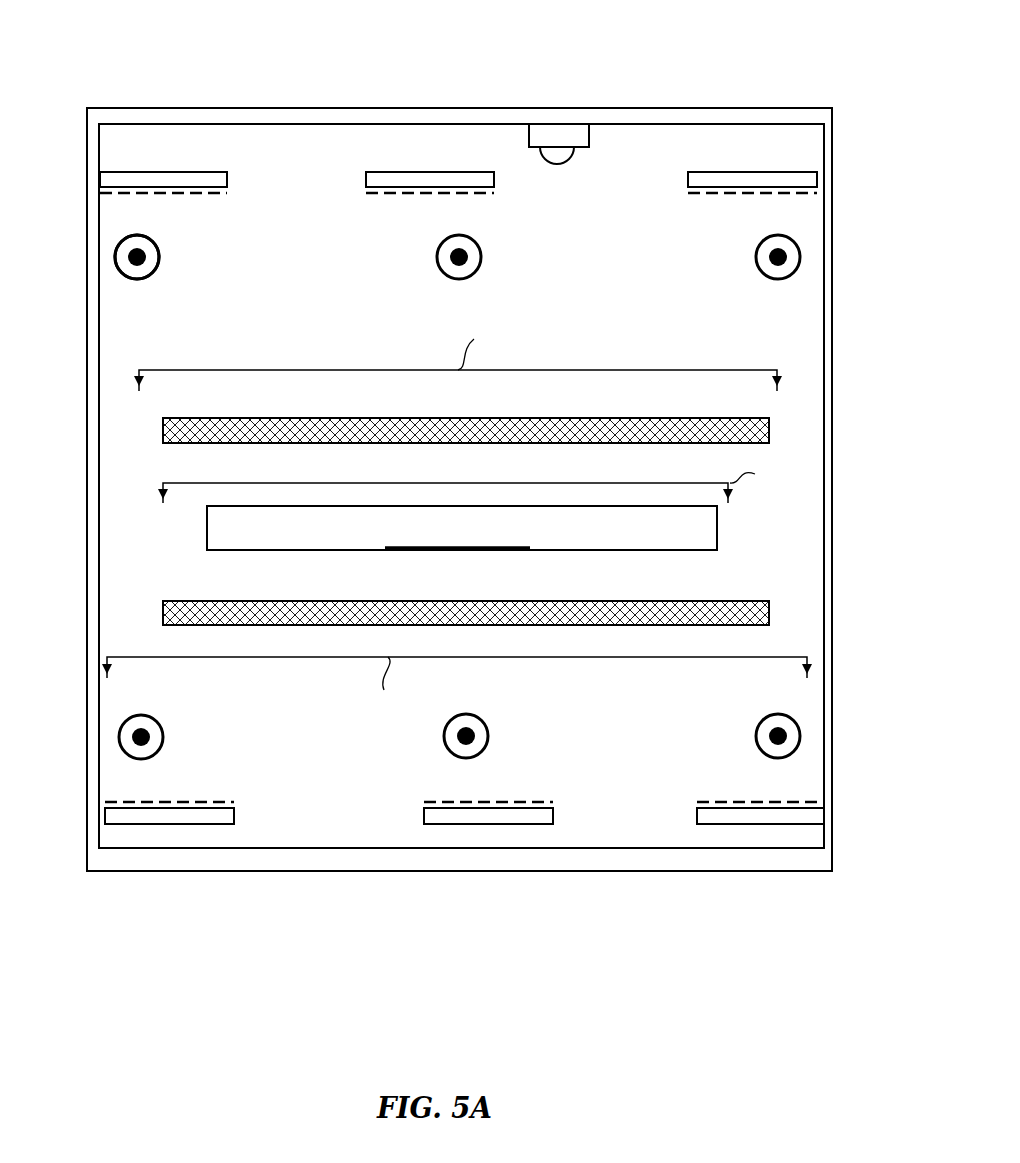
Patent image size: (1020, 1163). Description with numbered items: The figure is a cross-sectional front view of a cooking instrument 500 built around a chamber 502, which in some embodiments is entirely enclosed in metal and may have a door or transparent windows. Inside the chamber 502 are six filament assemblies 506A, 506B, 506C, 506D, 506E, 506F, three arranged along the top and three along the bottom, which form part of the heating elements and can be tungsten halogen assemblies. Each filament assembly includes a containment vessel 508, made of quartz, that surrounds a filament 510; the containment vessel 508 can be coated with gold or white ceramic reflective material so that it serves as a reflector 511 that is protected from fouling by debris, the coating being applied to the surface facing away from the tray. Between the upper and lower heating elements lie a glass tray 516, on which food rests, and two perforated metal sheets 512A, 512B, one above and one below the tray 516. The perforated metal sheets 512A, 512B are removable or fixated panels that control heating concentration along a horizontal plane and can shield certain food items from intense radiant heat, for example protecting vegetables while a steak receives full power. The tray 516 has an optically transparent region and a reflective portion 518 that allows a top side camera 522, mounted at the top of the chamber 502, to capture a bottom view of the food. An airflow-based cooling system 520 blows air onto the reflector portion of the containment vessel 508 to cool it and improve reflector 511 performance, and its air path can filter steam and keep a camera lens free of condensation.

The cooking instrument 500 is at (90, 41).
The chamber 502 is at (434, 858).
The filament assembly 506A is at (160, 271).
The filament assembly 506B is at (428, 231).
The filament assembly 506C is at (746, 231).
The filament assembly 506D is at (178, 712).
The filament assembly 506E is at (432, 708).
The filament assembly 506F is at (746, 708).
The containment vessel 508 is at (160, 258).
The filament 510 is at (140, 265).
The reflector 511 is at (148, 238).
The perforated metal sheet 512A is at (163, 428).
The perforated metal sheet 512B is at (163, 615).
The tray 516 is at (207, 531).
The reflective portion 518 is at (442, 550).
The airflow-based cooling system 520 is at (150, 175).
The top side camera 522 is at (552, 145).